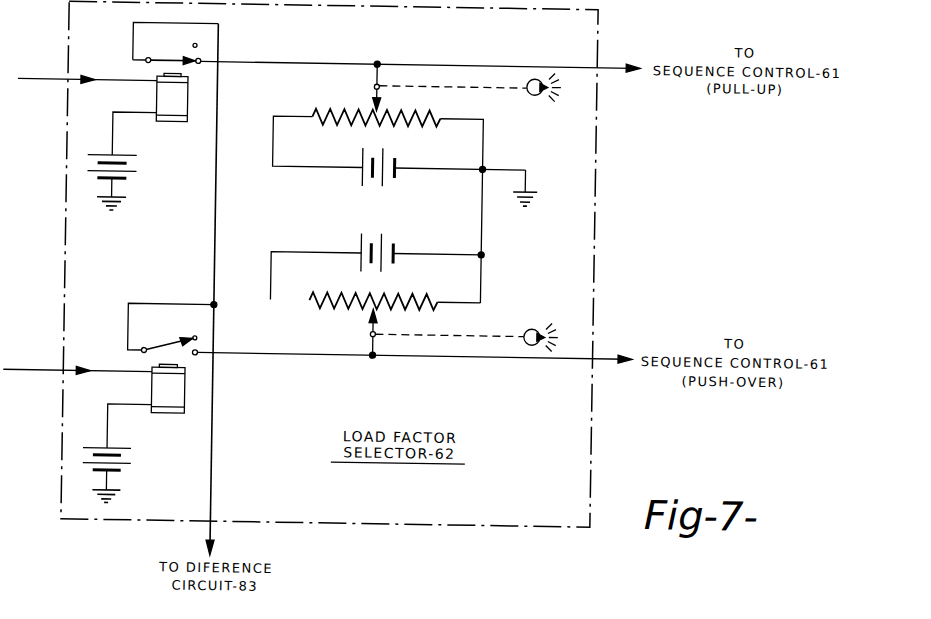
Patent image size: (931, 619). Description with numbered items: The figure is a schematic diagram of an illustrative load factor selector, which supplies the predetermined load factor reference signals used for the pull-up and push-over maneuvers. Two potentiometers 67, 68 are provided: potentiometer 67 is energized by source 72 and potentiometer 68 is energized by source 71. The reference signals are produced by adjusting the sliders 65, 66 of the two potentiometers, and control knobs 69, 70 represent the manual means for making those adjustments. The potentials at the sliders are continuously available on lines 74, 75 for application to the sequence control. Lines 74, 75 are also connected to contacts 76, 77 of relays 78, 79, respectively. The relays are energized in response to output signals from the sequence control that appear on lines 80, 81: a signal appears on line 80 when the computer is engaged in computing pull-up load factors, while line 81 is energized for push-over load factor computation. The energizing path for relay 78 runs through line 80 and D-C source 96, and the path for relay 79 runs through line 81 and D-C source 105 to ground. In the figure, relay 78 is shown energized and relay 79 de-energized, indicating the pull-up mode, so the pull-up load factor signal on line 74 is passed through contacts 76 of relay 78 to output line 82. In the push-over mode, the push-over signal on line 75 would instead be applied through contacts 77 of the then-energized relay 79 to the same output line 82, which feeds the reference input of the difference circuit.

The slider 65 is at (371, 99).
The slider 66 is at (370, 333).
The potentiometer 67 is at (347, 125).
The potentiometer 68 is at (357, 295).
The control knob 69 is at (530, 92).
The control knob 70 is at (533, 325).
The source 71 is at (396, 261).
The source 72 is at (380, 187).
The line 74 is at (604, 63).
The line 75 is at (606, 353).
The contacts 76 is at (196, 61).
The contacts 77 is at (201, 352).
The relay 78 is at (178, 125).
The relay 79 is at (180, 416).
The line 80 is at (35, 82).
The line 81 is at (29, 369).
The output line 82 is at (219, 529).
The D-C source 96 is at (138, 179).
The D-C source 105 is at (138, 470).